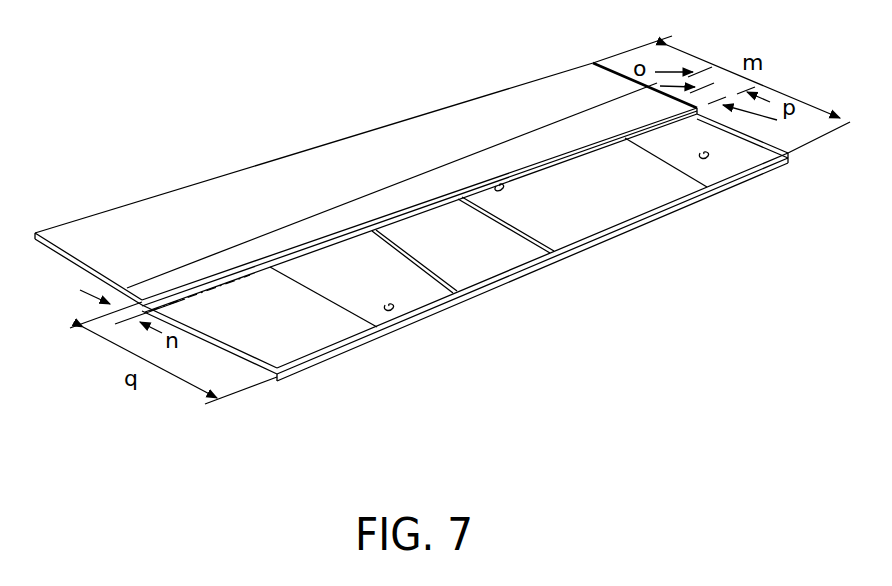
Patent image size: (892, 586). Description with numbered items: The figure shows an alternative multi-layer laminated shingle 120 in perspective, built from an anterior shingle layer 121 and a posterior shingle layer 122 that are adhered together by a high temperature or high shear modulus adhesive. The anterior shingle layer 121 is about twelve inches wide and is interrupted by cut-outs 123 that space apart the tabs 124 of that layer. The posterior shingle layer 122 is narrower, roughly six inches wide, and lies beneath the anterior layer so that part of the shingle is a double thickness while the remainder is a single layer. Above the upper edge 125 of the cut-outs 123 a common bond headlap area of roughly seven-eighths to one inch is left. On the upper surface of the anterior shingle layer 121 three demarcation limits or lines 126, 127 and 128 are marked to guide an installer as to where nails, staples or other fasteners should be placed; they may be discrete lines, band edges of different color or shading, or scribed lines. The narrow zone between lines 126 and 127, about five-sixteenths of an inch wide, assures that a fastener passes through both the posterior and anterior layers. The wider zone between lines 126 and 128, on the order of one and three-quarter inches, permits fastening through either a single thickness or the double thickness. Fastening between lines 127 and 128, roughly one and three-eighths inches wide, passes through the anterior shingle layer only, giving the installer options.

The multi-layer laminated shingle 120 is at (417, 211).
The anterior shingle layer 121 is at (330, 160).
The posterior shingle layer 122 is at (470, 251).
The cut-outs 123 is at (400, 308).
The tabs 124 is at (300, 338).
The upper edge of the cut-out areas 125 is at (517, 180).
The demarcation limit or line 126 is at (413, 212).
The demarcation limit or line 127 is at (465, 182).
The demarcation limit or line 128 is at (357, 197).